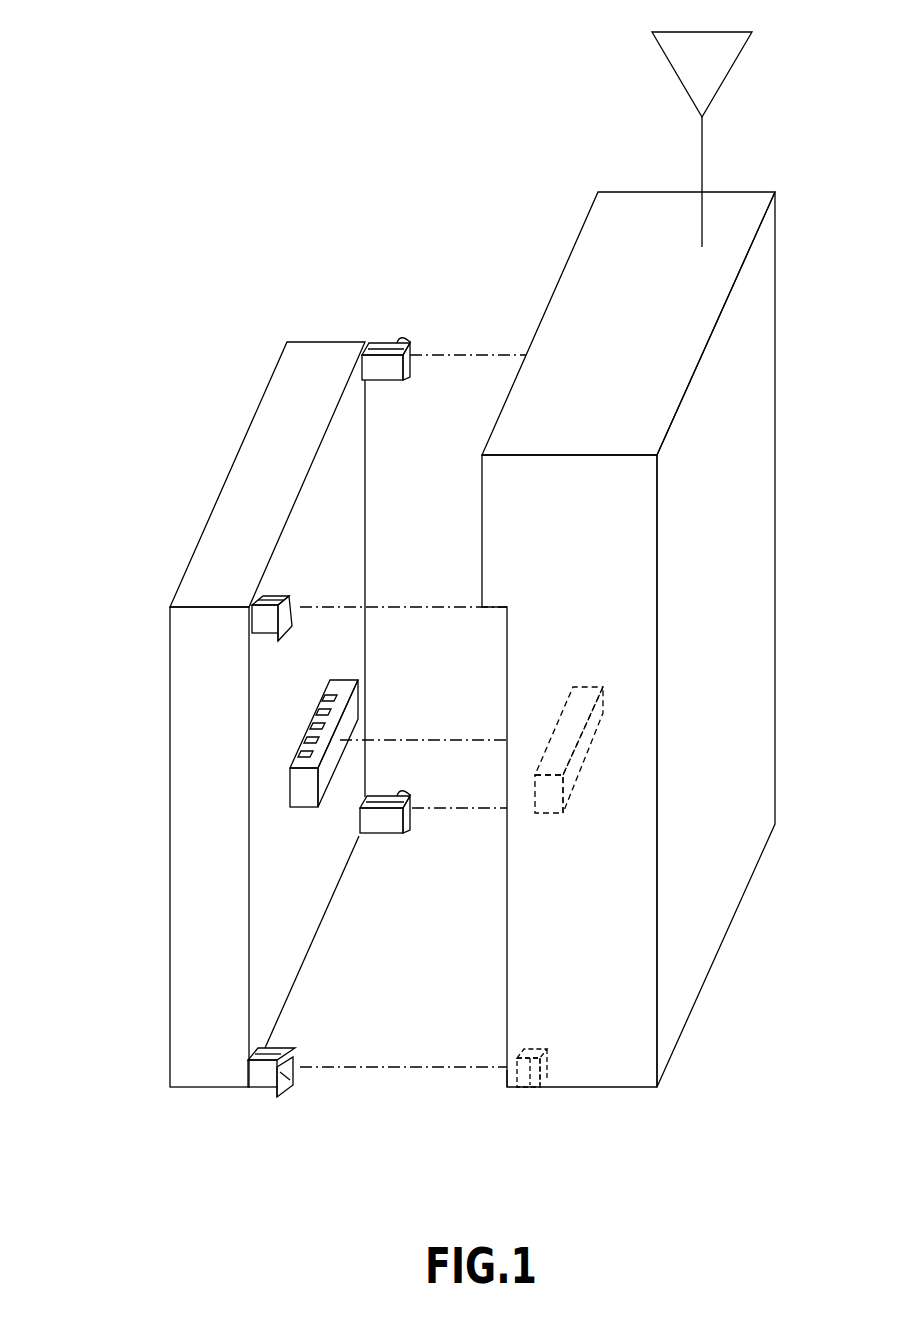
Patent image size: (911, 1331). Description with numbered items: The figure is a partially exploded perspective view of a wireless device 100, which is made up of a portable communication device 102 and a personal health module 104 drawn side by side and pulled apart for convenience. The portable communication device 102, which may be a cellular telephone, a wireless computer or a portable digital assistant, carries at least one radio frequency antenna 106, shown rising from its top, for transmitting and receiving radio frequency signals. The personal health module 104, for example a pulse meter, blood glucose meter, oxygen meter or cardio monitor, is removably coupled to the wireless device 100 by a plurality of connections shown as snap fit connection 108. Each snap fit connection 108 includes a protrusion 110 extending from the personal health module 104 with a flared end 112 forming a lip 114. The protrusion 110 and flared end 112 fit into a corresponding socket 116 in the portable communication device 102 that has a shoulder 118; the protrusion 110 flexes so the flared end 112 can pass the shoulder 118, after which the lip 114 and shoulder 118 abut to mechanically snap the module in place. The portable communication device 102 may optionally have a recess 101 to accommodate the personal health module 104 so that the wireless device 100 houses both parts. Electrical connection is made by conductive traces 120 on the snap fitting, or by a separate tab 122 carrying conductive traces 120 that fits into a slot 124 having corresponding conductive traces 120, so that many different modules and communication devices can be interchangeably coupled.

The wireless device 100 is at (462, 262).
The recess 101 is at (520, 1080).
The portable communication device 102 is at (690, 1005).
The personal health module 104 is at (195, 1078).
The radio frequency antenna 106 is at (752, 32).
The snap fit connection 108 is at (404, 346).
The protrusion 110 is at (265, 1078).
The flared end 112 is at (293, 1068).
The lip 114 is at (283, 1085).
The socket 116 is at (537, 1078).
The shoulder 118 is at (522, 1080).
The conductive traces 120 is at (297, 760).
The tab 122 is at (305, 737).
The slot 124 is at (598, 720).